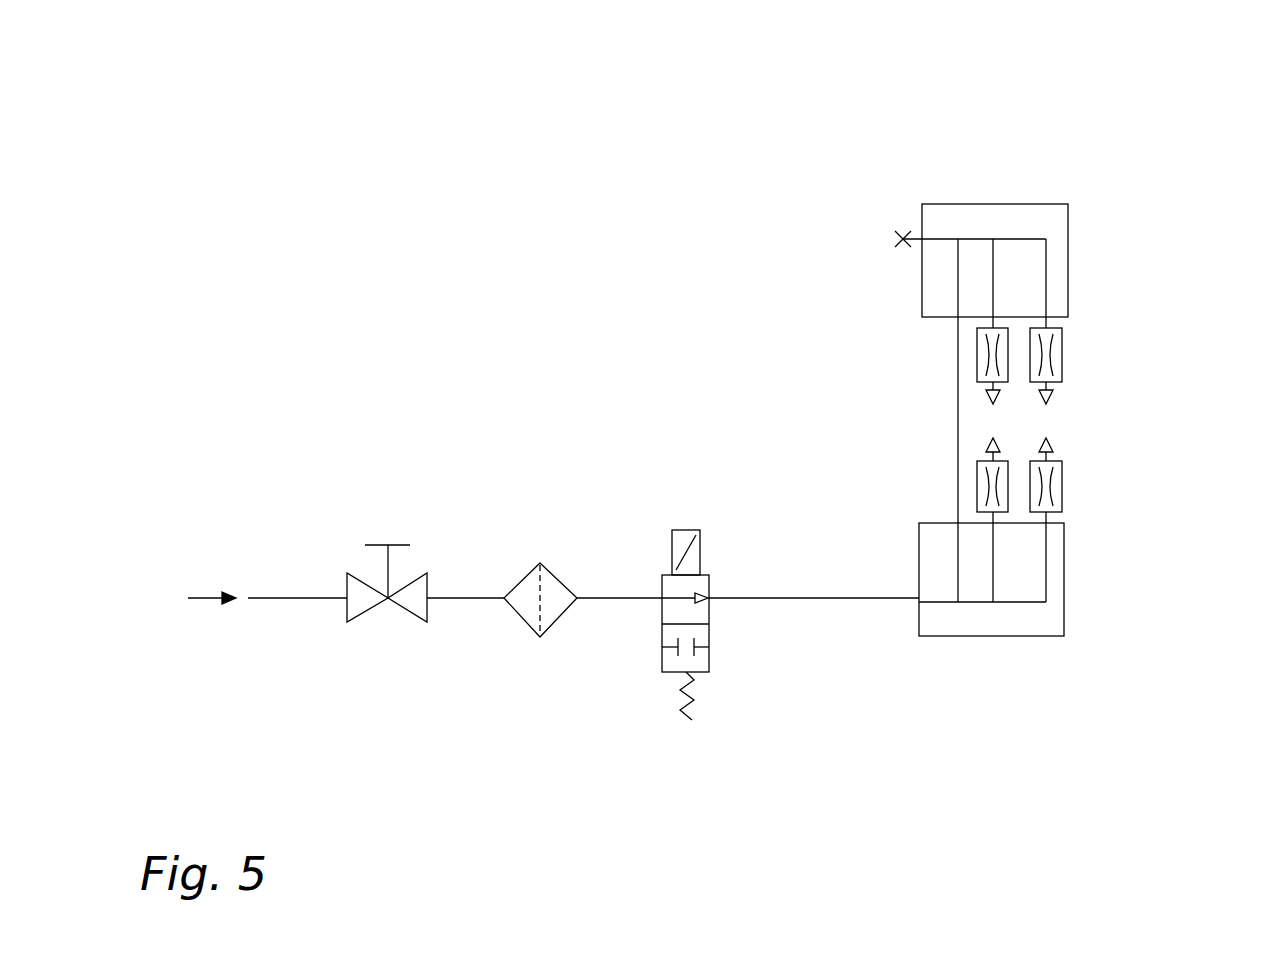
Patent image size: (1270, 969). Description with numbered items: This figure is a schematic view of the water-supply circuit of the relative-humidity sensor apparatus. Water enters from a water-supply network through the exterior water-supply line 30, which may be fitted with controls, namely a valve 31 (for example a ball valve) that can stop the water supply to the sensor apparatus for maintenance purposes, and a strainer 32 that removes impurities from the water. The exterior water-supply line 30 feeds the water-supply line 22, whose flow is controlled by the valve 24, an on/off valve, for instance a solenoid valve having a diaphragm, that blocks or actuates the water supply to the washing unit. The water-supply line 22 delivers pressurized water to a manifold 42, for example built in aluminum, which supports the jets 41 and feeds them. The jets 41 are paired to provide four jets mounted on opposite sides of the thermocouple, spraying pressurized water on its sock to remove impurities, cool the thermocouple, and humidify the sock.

The exterior water-supply line 30 is at (272, 622).
The valve 31 is at (378, 520).
The strainer 32 is at (522, 668).
The valve 24 is at (676, 502).
The water-supply line 22 is at (831, 612).
The manifold 42 is at (1028, 193).
The jets 41 is at (1100, 473).